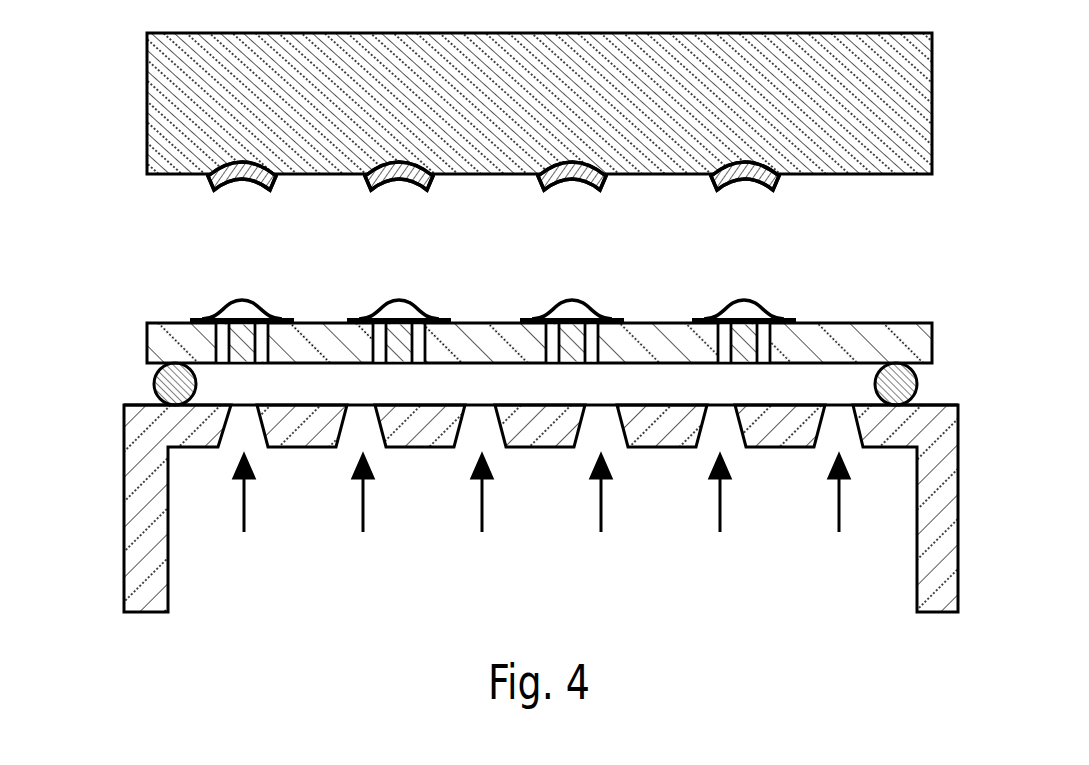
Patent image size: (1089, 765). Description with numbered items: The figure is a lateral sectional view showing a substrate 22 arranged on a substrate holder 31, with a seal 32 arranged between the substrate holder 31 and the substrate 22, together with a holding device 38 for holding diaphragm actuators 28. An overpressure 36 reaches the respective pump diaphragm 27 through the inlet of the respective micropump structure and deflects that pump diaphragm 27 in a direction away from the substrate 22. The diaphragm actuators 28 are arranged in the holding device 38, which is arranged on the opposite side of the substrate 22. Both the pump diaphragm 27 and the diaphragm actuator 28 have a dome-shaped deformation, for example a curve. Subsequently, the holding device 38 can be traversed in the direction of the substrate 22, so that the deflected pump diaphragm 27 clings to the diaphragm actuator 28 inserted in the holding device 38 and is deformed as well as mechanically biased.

The holding device 38 is at (908, 103).
The diaphragm actuator 28 is at (242, 181).
The substrate 22 is at (912, 342).
The pump diaphragm 27 is at (228, 302).
The seal 32 is at (158, 382).
The substrate holder 31 is at (938, 568).
The overpressure 36 is at (363, 502).